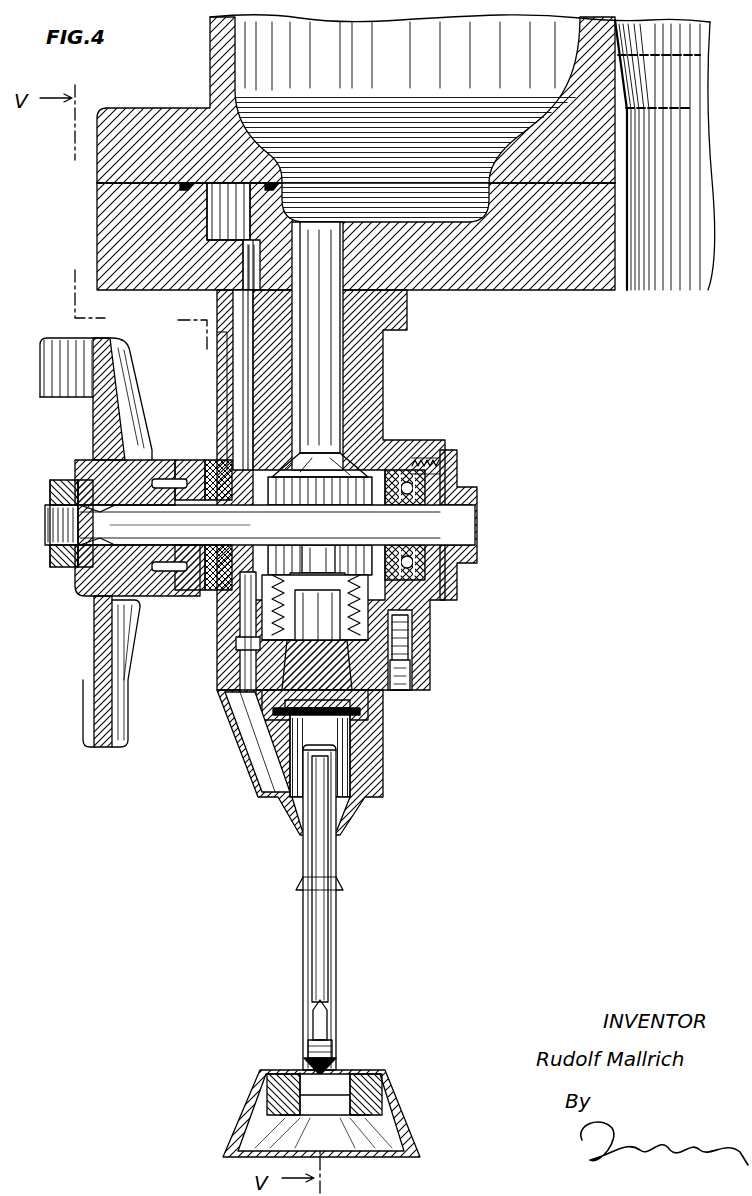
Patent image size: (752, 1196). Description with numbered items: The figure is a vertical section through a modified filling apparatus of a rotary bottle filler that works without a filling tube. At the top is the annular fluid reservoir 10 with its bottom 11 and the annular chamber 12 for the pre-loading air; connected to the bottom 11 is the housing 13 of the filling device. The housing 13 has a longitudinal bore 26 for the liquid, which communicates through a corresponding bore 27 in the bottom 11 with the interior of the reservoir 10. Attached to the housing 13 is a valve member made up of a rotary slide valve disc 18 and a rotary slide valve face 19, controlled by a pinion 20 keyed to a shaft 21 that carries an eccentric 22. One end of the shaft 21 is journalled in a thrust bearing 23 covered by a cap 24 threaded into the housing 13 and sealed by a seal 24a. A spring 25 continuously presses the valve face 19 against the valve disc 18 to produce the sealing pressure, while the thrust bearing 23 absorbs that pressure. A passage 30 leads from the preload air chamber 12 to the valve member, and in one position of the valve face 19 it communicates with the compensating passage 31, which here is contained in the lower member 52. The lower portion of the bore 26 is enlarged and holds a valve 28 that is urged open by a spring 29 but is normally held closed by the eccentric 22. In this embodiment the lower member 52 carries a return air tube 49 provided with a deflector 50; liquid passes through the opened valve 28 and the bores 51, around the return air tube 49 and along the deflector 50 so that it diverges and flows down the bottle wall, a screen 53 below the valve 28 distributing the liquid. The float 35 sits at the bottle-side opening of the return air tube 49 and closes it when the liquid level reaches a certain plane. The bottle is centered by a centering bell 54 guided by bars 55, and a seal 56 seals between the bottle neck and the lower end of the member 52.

The annular fluid reservoir 10 is at (556, 36).
The bottom 11 is at (601, 274).
The annular chamber 12 is at (210, 218).
The housing 13 is at (380, 352).
The rotary slide valve disc 18 is at (213, 460).
The rotary slide valve face 19 is at (192, 470).
The pinion 20 is at (95, 634).
The shaft 21 is at (149, 541).
The eccentric 22 is at (328, 515).
The thrust bearing 23 is at (405, 470).
The cap 24 is at (475, 510).
The seal 24a is at (438, 458).
The spring 25 is at (72, 483).
The longitudinal bore 26 is at (343, 396).
The bore 27 is at (343, 240).
The valve 28 is at (345, 680).
The spring 29 is at (388, 602).
The passage 30 is at (243, 366).
The passage 31 is at (236, 641).
The float 35 is at (313, 1026).
The return air tube 49 is at (328, 917).
The deflector 50 is at (342, 887).
The bores 51 is at (318, 758).
The member 52 is at (370, 773).
The screen 53 is at (290, 722).
The centering bell 54 is at (250, 1106).
The bars 55 is at (302, 917).
The seal 56 is at (392, 1092).